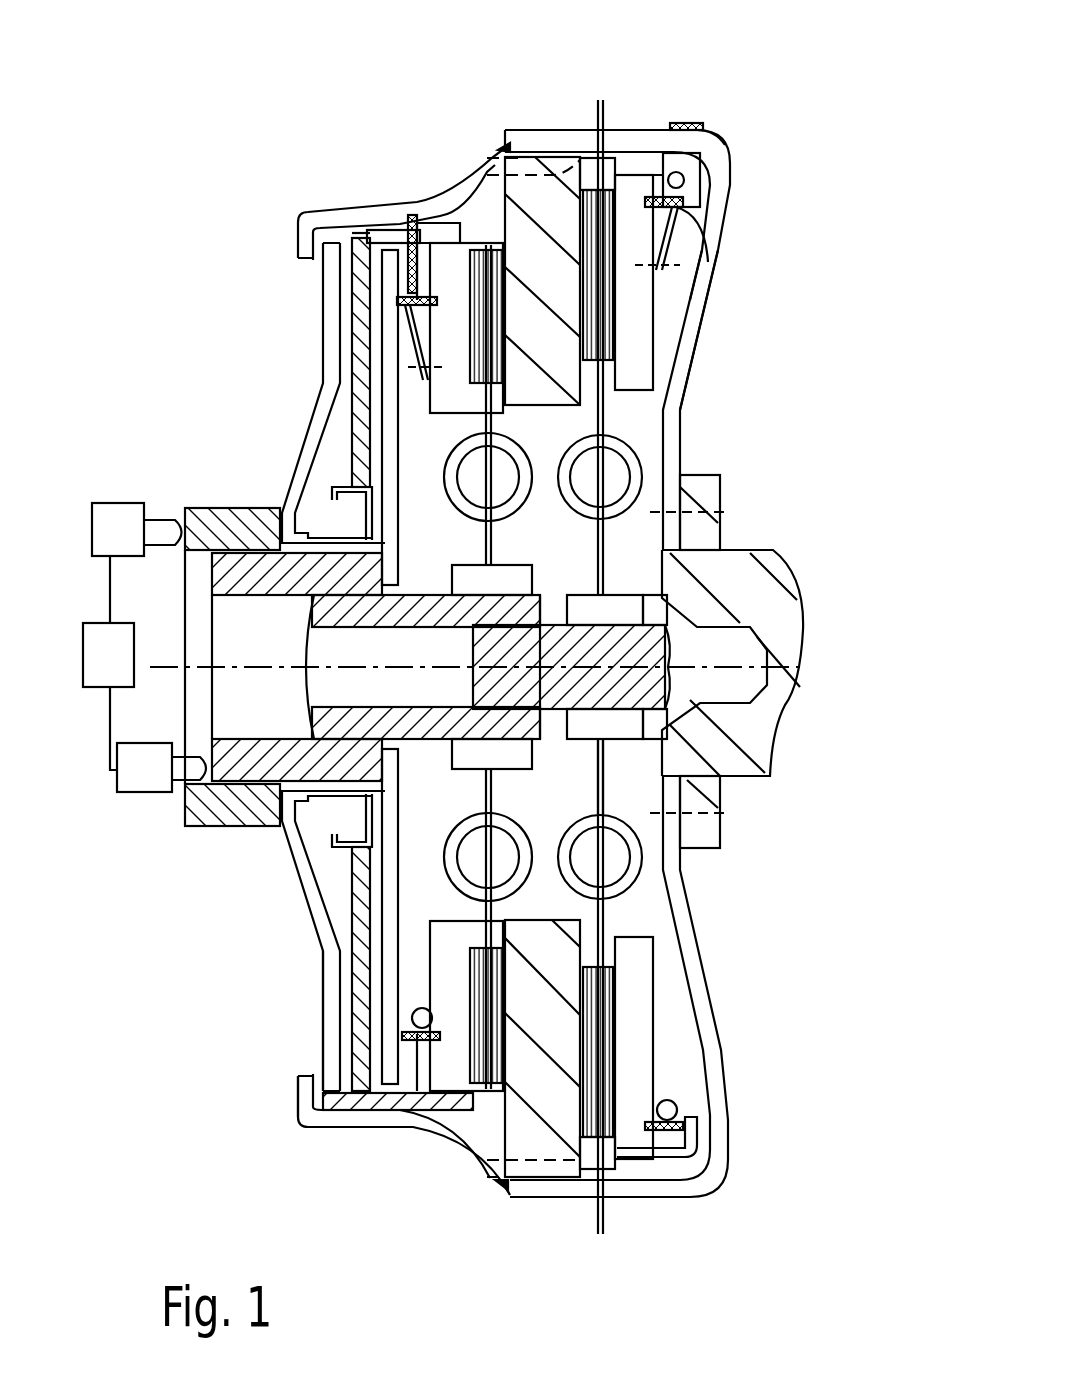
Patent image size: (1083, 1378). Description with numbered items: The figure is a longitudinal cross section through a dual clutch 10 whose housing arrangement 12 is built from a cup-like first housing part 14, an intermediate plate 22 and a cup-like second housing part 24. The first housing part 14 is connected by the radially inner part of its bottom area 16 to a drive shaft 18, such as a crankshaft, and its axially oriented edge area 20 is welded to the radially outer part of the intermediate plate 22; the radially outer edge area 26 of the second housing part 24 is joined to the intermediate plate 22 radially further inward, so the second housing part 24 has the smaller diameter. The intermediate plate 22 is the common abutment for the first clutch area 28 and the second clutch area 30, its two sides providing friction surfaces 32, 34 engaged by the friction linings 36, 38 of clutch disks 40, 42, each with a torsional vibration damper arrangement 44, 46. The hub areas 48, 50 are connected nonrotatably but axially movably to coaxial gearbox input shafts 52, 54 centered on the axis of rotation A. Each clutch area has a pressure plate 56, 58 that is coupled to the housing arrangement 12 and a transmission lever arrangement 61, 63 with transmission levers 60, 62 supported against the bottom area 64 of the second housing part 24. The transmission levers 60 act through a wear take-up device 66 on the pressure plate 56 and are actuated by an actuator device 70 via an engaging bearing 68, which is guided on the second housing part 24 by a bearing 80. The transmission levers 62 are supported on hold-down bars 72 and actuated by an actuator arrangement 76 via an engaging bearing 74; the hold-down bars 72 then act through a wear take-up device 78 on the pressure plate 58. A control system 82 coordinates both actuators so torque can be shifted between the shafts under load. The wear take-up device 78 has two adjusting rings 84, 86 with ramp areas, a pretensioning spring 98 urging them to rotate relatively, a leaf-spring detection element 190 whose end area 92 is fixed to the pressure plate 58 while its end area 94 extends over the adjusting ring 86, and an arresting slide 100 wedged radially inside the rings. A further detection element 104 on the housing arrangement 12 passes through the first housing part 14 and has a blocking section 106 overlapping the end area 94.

The dual clutch 10 is at (265, 172).
The housing arrangement 12 is at (733, 140).
The first housing part 14 is at (726, 238).
The bottom area 16 is at (686, 367).
The drive shaft 18 is at (773, 550).
The edge area 20 is at (588, 135).
The intermediate plate 22 is at (560, 962).
The second housing part 24 is at (357, 934).
The radially outer edge area 26 is at (410, 1112).
The first clutch area 28 is at (387, 190).
The second clutch area 30 is at (695, 105).
The friction surface 32 is at (495, 1112).
The friction surface 34 is at (603, 1140).
The friction linings 36 is at (473, 1037).
The friction linings 38 is at (617, 1070).
The clutch disk 40 is at (440, 811).
The clutch disk 42 is at (683, 773).
The torsional vibration damper arrangement 44 is at (620, 787).
The torsional vibration damper arrangement 46 is at (653, 857).
The hub area 48 is at (513, 573).
The hub area 50 is at (640, 607).
The gearbox input shaft 52 is at (300, 598).
The gearbox input shaft 54 is at (652, 654).
The pressure plate 56 is at (425, 337).
The pressure plate 58 is at (645, 320).
The transmission lever 60 is at (390, 258).
The transmission lever arrangement 61 is at (437, 436).
The transmission lever 62 is at (336, 358).
The transmission lever arrangement 63 is at (318, 1052).
The bottom area 64 is at (358, 425).
The wear take-up device 66 is at (420, 215).
The engaging bearing 68 is at (243, 772).
The actuator device 70 is at (132, 793).
The hold-down bar 72 is at (447, 272).
The engaging bearing 74 is at (203, 513).
The actuator arrangement 76 is at (110, 503).
The wear take-up device 78 is at (690, 234).
The bearing 80 is at (330, 838).
The control system 82 is at (83, 660).
The adjusting ring 84 is at (650, 195).
The adjusting ring 86 is at (702, 180).
The end area 92 is at (415, 297).
The end area 94 is at (683, 193).
The pretensioning spring 98 is at (680, 1103).
The arresting slide 100 is at (500, 150).
The detection element 104 is at (702, 128).
The blocking section 106 is at (672, 123).
The detection element 190 is at (700, 264).
The axis of rotation A is at (807, 641).